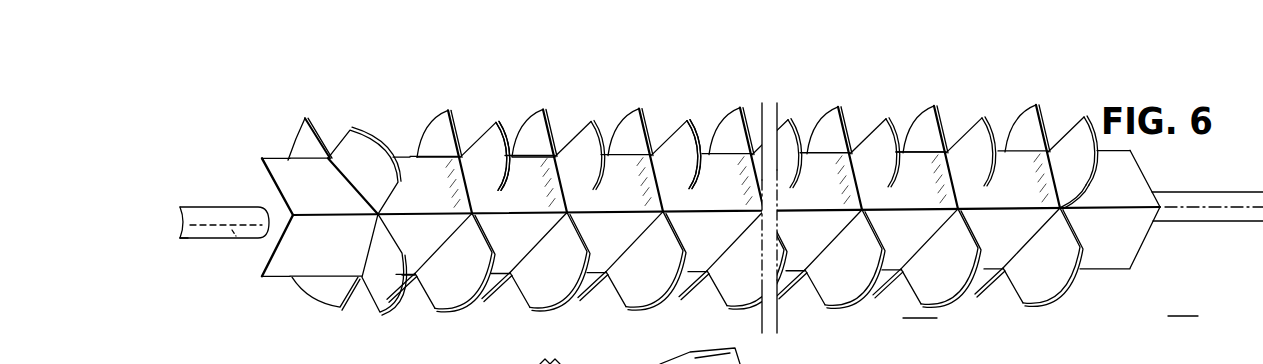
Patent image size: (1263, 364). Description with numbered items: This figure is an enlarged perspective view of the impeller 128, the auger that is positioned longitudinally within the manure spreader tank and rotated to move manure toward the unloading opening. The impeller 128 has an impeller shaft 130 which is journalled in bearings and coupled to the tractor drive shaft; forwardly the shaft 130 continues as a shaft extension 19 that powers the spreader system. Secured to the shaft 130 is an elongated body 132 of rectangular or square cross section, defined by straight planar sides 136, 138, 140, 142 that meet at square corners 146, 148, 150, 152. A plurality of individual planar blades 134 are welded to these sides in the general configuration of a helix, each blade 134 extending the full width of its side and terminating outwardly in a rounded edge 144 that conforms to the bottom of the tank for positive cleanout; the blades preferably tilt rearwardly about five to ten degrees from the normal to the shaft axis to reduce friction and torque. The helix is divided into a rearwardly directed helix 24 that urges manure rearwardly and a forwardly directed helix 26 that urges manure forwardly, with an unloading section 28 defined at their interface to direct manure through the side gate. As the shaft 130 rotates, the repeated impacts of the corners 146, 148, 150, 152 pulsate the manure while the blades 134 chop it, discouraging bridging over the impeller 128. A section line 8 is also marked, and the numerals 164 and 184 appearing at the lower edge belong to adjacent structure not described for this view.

The section line 8- 8 is at (920, 320).
The shaft extension 19 is at (186, 239).
The rearwardly directed helix 24 is at (404, 134).
The forwardly directed helix 26 is at (932, 97).
The unloading section 28 is at (588, 89).
The impeller 128 is at (812, 293).
The impeller shaft 130 is at (188, 208).
The elongated body 132 is at (283, 281).
The planar blades 134 is at (360, 146).
The planar side 136 is at (244, 258).
The planar side 138 is at (249, 178).
The planar side 140 is at (305, 118).
The planar side 142 is at (303, 270).
The rounded edge 144 is at (500, 124).
The square corner 146 is at (230, 228).
The square corner 148 is at (262, 158).
The square corner 150 is at (296, 220).
The square corner 152 is at (262, 280).
The gear 164 is at (664, 350).
The gear teeth 184 is at (526, 350).